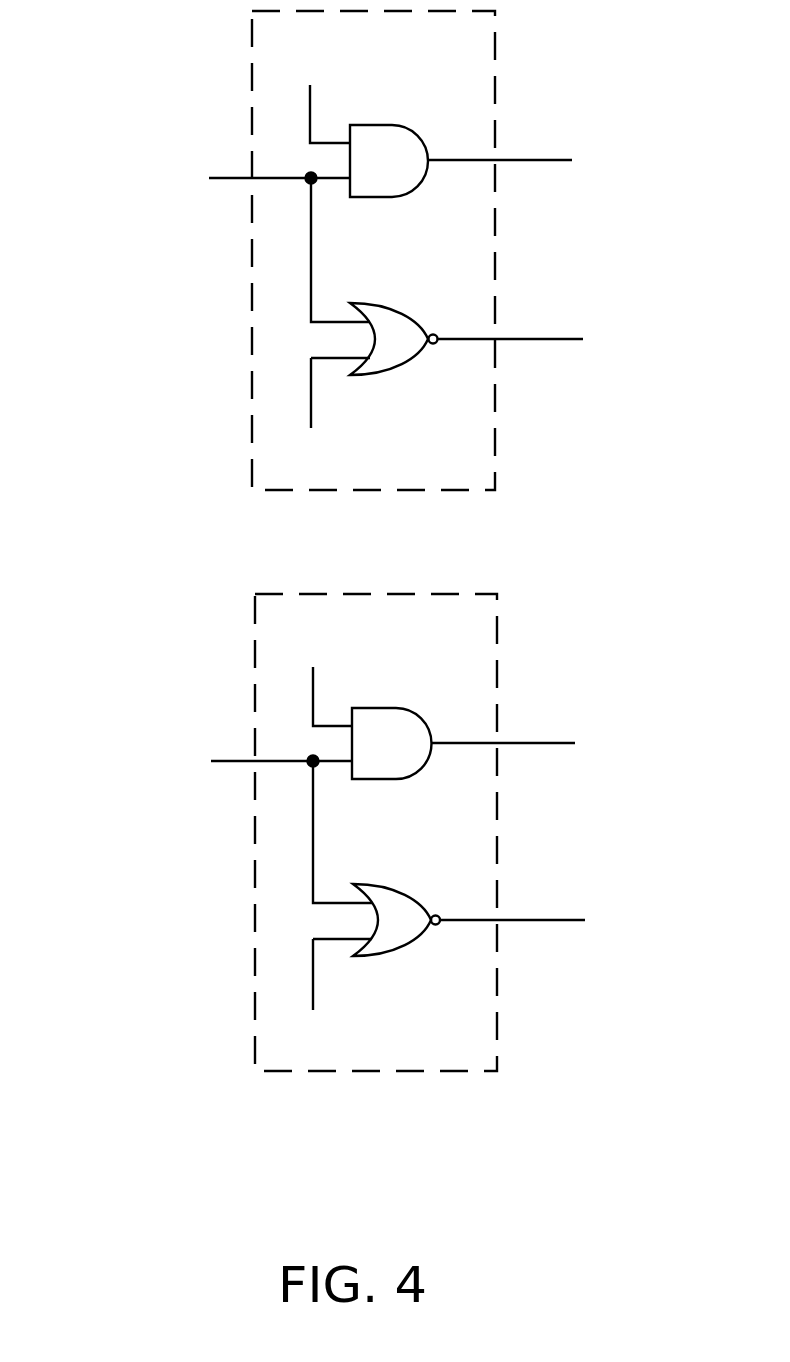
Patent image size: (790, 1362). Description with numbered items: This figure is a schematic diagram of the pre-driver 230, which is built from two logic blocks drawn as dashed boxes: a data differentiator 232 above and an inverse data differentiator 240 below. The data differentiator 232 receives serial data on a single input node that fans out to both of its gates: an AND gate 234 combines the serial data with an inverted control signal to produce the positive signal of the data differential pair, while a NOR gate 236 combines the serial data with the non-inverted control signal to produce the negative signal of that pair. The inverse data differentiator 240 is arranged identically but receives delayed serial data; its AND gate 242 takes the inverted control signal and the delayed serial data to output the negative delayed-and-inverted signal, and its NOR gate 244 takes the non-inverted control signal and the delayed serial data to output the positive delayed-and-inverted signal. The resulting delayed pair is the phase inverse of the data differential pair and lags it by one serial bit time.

The pre-driver 230 is at (110, 28).
The data differentiator 232 is at (495, 52).
The AND gate 234 is at (388, 126).
The NOR gate 236 is at (390, 304).
The inverse data differentiator 240 is at (497, 634).
The AND gate 242 is at (390, 709).
The NOR gate 244 is at (393, 885).